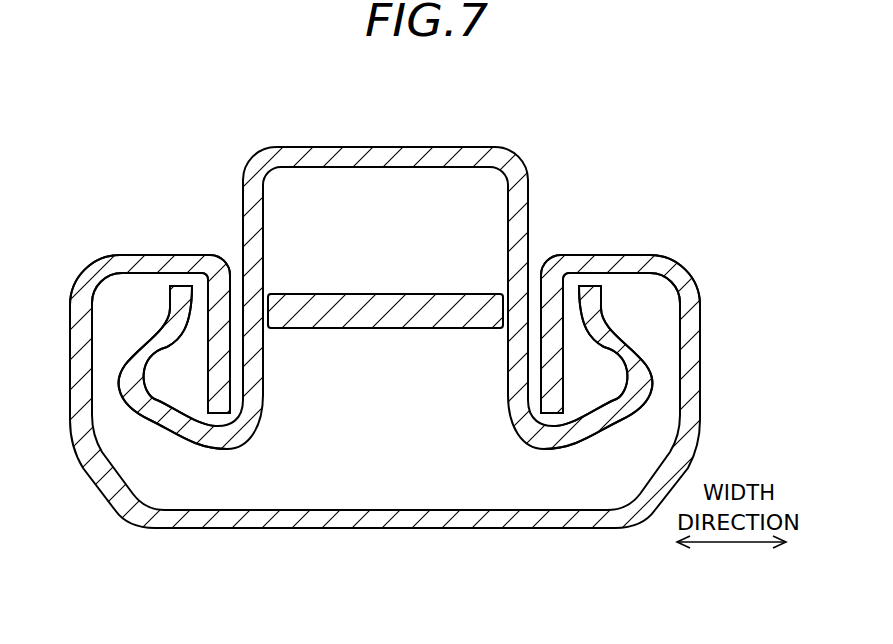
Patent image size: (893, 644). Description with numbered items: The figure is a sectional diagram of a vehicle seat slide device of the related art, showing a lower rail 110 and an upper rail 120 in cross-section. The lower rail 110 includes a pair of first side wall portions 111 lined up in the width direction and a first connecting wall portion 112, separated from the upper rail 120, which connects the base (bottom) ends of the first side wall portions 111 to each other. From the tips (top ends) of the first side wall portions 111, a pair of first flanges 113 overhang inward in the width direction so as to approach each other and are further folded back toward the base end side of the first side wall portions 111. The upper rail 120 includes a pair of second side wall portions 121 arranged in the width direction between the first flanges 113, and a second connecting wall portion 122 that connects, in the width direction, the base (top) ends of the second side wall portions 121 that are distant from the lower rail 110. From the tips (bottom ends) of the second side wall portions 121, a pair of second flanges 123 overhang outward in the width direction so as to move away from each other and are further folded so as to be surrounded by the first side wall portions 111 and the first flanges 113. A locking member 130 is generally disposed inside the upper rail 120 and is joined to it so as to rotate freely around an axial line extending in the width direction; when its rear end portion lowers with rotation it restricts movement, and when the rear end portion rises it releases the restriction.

The lower rail 110 is at (517, 530).
The first side wall portions 111 is at (70, 366).
The first connecting wall portion 112 is at (424, 520).
The first flanges 113 is at (128, 254).
The upper rail 120 is at (474, 145).
The second side wall portions 121 is at (242, 192).
The second connecting wall portion 122 is at (383, 147).
The second flanges 123 is at (133, 349).
The locking member 130 is at (376, 294).